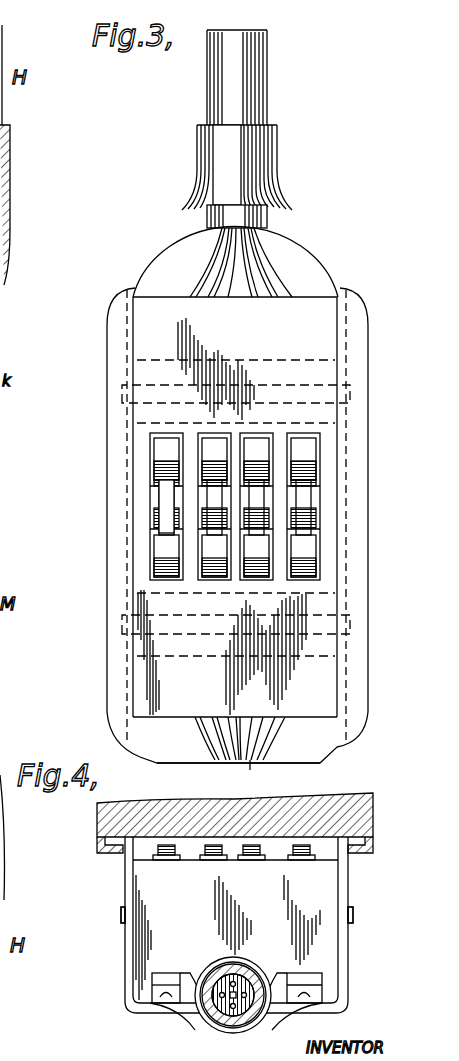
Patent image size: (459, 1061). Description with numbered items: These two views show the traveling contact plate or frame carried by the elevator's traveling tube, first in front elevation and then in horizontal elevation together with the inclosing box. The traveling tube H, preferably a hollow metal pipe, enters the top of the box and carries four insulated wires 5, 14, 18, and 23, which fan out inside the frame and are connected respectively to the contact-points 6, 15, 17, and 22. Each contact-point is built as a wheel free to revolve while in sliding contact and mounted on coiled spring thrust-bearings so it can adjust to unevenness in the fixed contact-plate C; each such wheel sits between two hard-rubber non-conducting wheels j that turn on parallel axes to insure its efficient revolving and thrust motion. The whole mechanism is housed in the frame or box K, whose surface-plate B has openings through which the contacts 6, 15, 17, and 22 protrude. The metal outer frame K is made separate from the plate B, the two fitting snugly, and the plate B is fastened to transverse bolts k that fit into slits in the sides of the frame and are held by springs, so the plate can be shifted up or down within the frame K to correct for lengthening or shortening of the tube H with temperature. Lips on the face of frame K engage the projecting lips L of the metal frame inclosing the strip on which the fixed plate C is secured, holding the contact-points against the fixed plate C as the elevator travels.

In FIG. 3, the traveling tube H is at (238, 129).
In FIG. 4, the traveling tube H is at (236, 1007).
In FIG. 3, the outer frame K is at (230, 495).
In FIG. 4, the outer frame K is at (248, 925).
In FIG. 3, the transverse bolts k is at (122, 398).
In FIG. 4, the transverse bolts k is at (122, 920).
In FIG. 3, the surface-plate B is at (222, 516).
In FIG. 4, the surface-plate B is at (257, 919).
In FIG. 3, the non-conducting wheels j is at (226, 506).
In FIG. 3, the wire 5 is at (212, 262).
In FIG. 3, the wire 23 is at (247, 496).
In FIG. 3, the contact-point 6 is at (166, 506).
In FIG. 4, the contact-point 6 is at (301, 862).
In FIG. 3, the contact-point 15 is at (214, 506).
In FIG. 4, the contact-point 15 is at (251, 863).
In FIG. 3, the contact-point 17 is at (256, 506).
In FIG. 4, the contact-point 17 is at (213, 863).
In FIG. 3, the contact-point 22 is at (303, 506).
In FIG. 4, the contact-point 22 is at (166, 863).
In FIG. 3, the wire 14 is at (236, 749).
In FIG. 3, the wire 18 is at (259, 775).
In FIG. 3, the fixed contact-plate C is at (246, 774).
In FIG. 4, the lips L is at (234, 823).